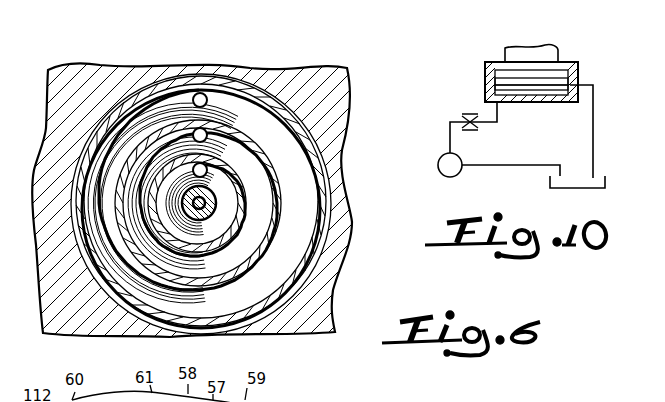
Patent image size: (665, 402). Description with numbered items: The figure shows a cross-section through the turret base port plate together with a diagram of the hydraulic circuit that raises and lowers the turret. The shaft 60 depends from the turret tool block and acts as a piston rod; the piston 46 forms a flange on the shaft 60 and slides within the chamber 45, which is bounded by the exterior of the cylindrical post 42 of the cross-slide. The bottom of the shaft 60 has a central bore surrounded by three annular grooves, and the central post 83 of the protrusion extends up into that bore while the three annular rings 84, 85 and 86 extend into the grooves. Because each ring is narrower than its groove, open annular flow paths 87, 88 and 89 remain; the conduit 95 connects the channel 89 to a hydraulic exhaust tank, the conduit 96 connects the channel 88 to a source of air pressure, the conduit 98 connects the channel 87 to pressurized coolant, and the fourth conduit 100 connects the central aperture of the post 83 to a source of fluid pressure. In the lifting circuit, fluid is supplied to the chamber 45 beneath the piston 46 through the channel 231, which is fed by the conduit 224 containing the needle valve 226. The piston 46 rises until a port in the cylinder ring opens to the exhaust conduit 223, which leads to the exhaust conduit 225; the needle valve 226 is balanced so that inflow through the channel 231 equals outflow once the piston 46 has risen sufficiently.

In FIG. 6, the cylindrical post 42 is at (306, 68).
In FIG. 6, the annular ring 86 is at (235, 335).
In FIG. 6, the annular channel 89 is at (297, 232).
In FIG. 6, the annular ring 85 is at (252, 278).
In FIG. 6, the annular channel 88 is at (268, 221).
In FIG. 6, the annular channel 87 is at (237, 203).
In FIG. 6, the annular ring 84 is at (236, 237).
In FIG. 6, the central post 83 is at (203, 222).
In FIG. 6, the fourth conduit 100 is at (270, 153).
In FIG. 6, the conduit 95 is at (203, 93).
In FIG. 6, the conduit 96 is at (207, 134).
In FIG. 6, the conduit 98 is at (207, 170).
In FIG. 10, the channel 231 is at (485, 101).
In FIG. 10, the piston 46 is at (522, 80).
In FIG. 10, the chamber 45 is at (543, 92).
In FIG. 10, the shaft 60 is at (553, 48).
In FIG. 10, the exhaust conduit 223 is at (572, 83).
In FIG. 10, the exhaust conduit 225 is at (593, 140).
In FIG. 10, the conduit 224 is at (499, 127).
In FIG. 10, the needle valve 226 is at (470, 130).